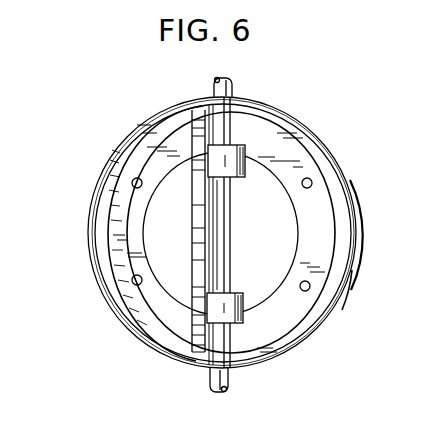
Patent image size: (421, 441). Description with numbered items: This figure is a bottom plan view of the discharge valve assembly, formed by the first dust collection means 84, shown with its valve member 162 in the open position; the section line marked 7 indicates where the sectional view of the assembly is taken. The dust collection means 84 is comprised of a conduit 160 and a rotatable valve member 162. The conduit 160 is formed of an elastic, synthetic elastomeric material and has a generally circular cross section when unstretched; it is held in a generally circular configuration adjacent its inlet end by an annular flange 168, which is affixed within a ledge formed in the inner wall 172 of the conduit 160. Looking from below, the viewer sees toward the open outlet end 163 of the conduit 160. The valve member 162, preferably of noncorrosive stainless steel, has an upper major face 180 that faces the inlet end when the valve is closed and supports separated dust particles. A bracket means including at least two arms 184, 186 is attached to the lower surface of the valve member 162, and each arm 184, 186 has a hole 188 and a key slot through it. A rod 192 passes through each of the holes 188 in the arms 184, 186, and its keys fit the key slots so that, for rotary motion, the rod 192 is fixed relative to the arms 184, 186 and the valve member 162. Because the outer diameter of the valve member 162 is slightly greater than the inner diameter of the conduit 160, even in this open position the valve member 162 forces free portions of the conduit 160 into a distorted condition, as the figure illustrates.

The first dust collection means 84 is at (291, 101).
The open outlet end 163 is at (332, 178).
The conduit 160 is at (344, 296).
The valve member 162 is at (183, 336).
The annular flange 168 is at (142, 328).
The inner wall 172 is at (285, 328).
The upper major face 180 is at (194, 125).
The rod 192 is at (233, 92).
The hole 188 is at (204, 201).
The arm 184 is at (237, 178).
The arm 186 is at (241, 293).
The section line 7- 7 is at (80, 230).